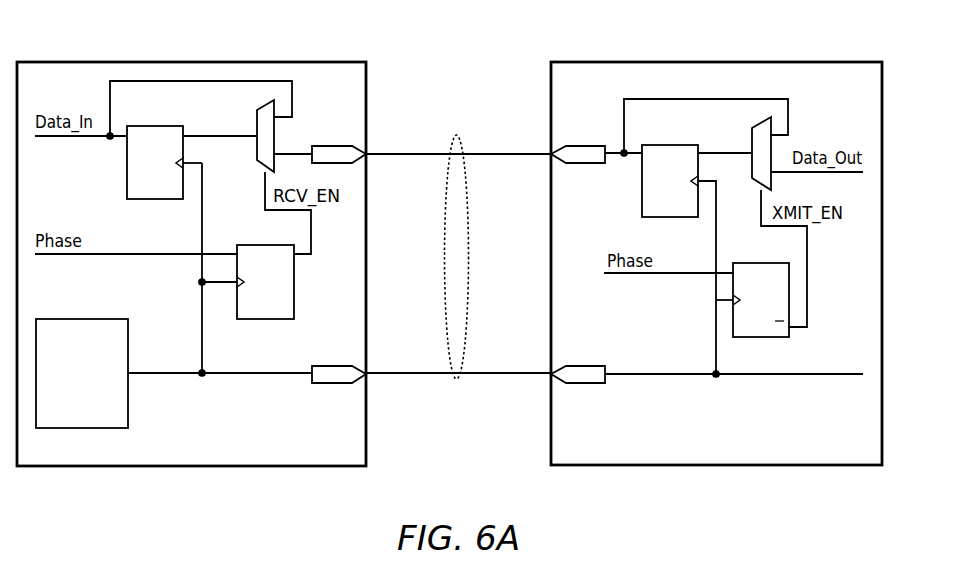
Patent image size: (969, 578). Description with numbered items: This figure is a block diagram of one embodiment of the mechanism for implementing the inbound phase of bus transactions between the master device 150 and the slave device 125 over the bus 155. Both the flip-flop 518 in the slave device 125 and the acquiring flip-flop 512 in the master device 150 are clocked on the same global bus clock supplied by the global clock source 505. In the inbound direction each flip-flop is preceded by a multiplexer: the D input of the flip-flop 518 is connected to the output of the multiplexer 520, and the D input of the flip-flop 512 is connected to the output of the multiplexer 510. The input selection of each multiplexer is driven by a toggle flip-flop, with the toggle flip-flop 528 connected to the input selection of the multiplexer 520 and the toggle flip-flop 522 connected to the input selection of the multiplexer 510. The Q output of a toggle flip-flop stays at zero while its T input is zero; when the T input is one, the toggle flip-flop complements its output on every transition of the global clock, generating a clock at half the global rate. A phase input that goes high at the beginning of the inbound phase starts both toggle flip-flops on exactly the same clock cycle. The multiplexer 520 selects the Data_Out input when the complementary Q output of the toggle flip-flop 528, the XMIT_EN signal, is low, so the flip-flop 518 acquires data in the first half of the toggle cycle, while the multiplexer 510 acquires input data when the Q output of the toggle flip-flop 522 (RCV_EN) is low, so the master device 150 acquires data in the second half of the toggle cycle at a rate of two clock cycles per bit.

The master device 150 is at (293, 466).
The slave device 125 is at (805, 465).
The bus 155 is at (455, 379).
The global clock source 505 is at (83, 319).
The multiplexer 510 is at (277, 133).
The acquiring flip-flop 512 is at (127, 183).
The flip-flop 518 is at (642, 186).
The multiplexer 520 is at (773, 147).
The toggle flip-flop 522 is at (294, 285).
The toggle flip-flop 528 is at (733, 300).